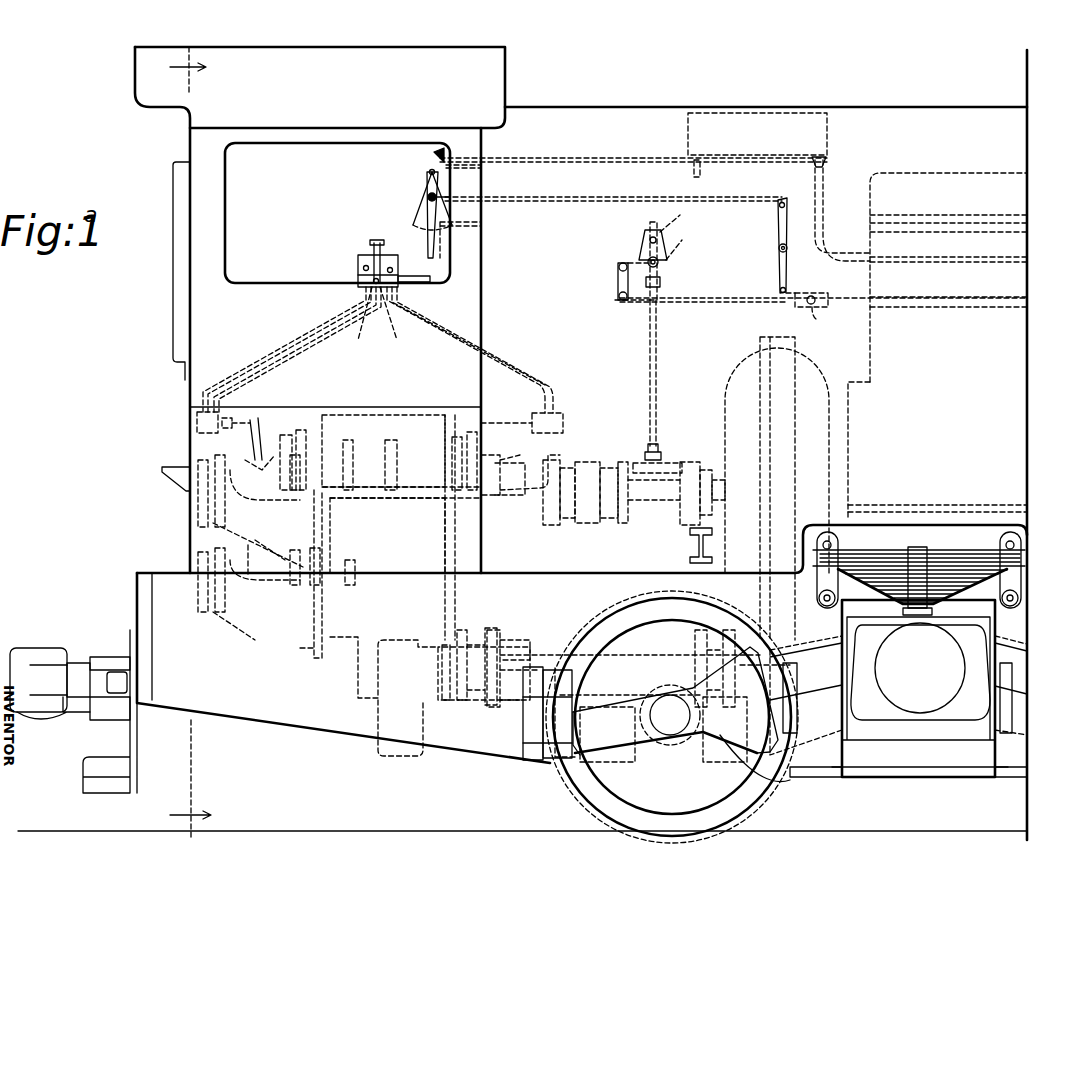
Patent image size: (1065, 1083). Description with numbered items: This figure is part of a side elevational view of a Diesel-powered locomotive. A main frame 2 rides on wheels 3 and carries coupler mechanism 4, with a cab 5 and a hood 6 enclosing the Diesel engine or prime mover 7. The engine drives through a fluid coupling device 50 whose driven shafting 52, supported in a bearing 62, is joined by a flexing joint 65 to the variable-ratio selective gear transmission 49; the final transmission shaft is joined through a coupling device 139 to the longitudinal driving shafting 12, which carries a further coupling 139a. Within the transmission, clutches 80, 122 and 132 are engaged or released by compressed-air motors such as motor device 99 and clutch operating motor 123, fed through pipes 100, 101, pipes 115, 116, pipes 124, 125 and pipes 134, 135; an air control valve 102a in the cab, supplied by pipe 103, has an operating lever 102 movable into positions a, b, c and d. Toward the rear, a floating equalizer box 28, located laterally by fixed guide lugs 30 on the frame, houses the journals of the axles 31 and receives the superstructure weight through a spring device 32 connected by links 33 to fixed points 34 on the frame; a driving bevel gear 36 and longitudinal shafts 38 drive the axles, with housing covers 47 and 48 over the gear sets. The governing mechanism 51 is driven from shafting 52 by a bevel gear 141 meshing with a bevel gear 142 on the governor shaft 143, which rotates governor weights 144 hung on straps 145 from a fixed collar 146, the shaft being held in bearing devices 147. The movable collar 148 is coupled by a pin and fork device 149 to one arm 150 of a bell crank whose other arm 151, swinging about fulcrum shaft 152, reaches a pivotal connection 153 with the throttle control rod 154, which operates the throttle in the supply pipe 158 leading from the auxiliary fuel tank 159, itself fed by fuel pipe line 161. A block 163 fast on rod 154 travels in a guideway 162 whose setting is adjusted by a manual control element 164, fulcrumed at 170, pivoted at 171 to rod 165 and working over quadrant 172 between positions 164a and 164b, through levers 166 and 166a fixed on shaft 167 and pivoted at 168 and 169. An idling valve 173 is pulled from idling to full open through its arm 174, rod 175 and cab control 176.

The main frame 2 is at (293, 733).
The wheels 3 is at (590, 783).
The coupler mechanism 4 is at (32, 650).
The cab 5 is at (200, 323).
The hood 6 is at (902, 107).
The Diesel engine 7 is at (937, 437).
The shafting 12 is at (546, 655).
The floating equalizer box member 28 is at (866, 712).
The fixed guide lugs 30 is at (552, 764).
The axles 31 is at (675, 727).
The spring device 32 is at (945, 560).
The links 33 is at (822, 580).
The fixed points 34 is at (820, 600).
The driving bevel gear 36 is at (916, 616).
The longitudinal shafts 38 is at (812, 692).
The housing covers 47 is at (772, 780).
The housing cover 48 is at (920, 671).
The variable-ratio power transmission 49 is at (364, 585).
The fluid coupling device 50 is at (740, 392).
The governing mechanism 51 is at (618, 266).
The shafting 52 is at (651, 500).
The bearing 62 is at (697, 515).
The flexing joint 65 is at (595, 515).
The clutch 80 is at (520, 458).
The motor device 99 is at (563, 422).
The pipe 100 is at (455, 355).
The pipe 101 is at (512, 367).
The operating lever 102 is at (370, 244).
The air control valve 102a is at (408, 290).
The pipe 103 is at (425, 283).
The air supply pipe 115 is at (362, 290).
The air supply pipe 116 is at (366, 300).
The clutch 122 is at (282, 438).
The clutch operating motor 123 is at (196, 424).
The pipe 124 is at (272, 355).
The pipe 125 is at (312, 345).
The clutch 132 is at (292, 580).
The pipe 134 is at (359, 319).
The pipe 135 is at (402, 319).
The coupling device 139 is at (508, 695).
The coupling 139a is at (668, 696).
The bevel gear 141 is at (690, 470).
The bevel gear 142 is at (672, 462).
The governor shaft 143 is at (650, 372).
The governor weights 144 is at (643, 245).
The links 145 is at (688, 232).
The fixed collar 146 is at (656, 224).
The bearing devices 147 is at (661, 263).
The movable collar 148 is at (660, 262).
The pin and fork device 149 is at (676, 262).
The bell crank arm 150 is at (618, 260).
The bell crank arm 151 is at (612, 283).
The bell crank fulcrum shaft 152 is at (614, 278).
The pivotal connection 153 is at (623, 302).
The throttle control rod 154 is at (731, 300).
The supply pipe 158 is at (945, 258).
The auxiliary fuel tank 159 is at (758, 113).
The fuel pipe line 161 is at (693, 170).
The guideway 162 is at (818, 311).
The block 163 is at (818, 293).
The manual control element 164 is at (481, 256).
The control element position 164a is at (481, 218).
The control element position 164b is at (370, 225).
The rod 165 is at (567, 197).
The lever 166 is at (778, 218).
The lever 166a is at (818, 253).
The shaft 167 is at (779, 248).
The pivotal connection 168 is at (781, 200).
The pivotal connection 169 is at (780, 291).
The fulcrum 170 is at (428, 163).
The pivotal connection point 171 is at (428, 196).
The quadrant 172 is at (426, 217).
The idling valve 173 is at (826, 166).
The arm 174 is at (835, 157).
The rod 175 is at (611, 158).
The cab control 176 is at (438, 150).
The lever position a is at (356, 266).
The lever position b is at (362, 266).
The lever position c is at (385, 263).
The lever position d is at (394, 268).